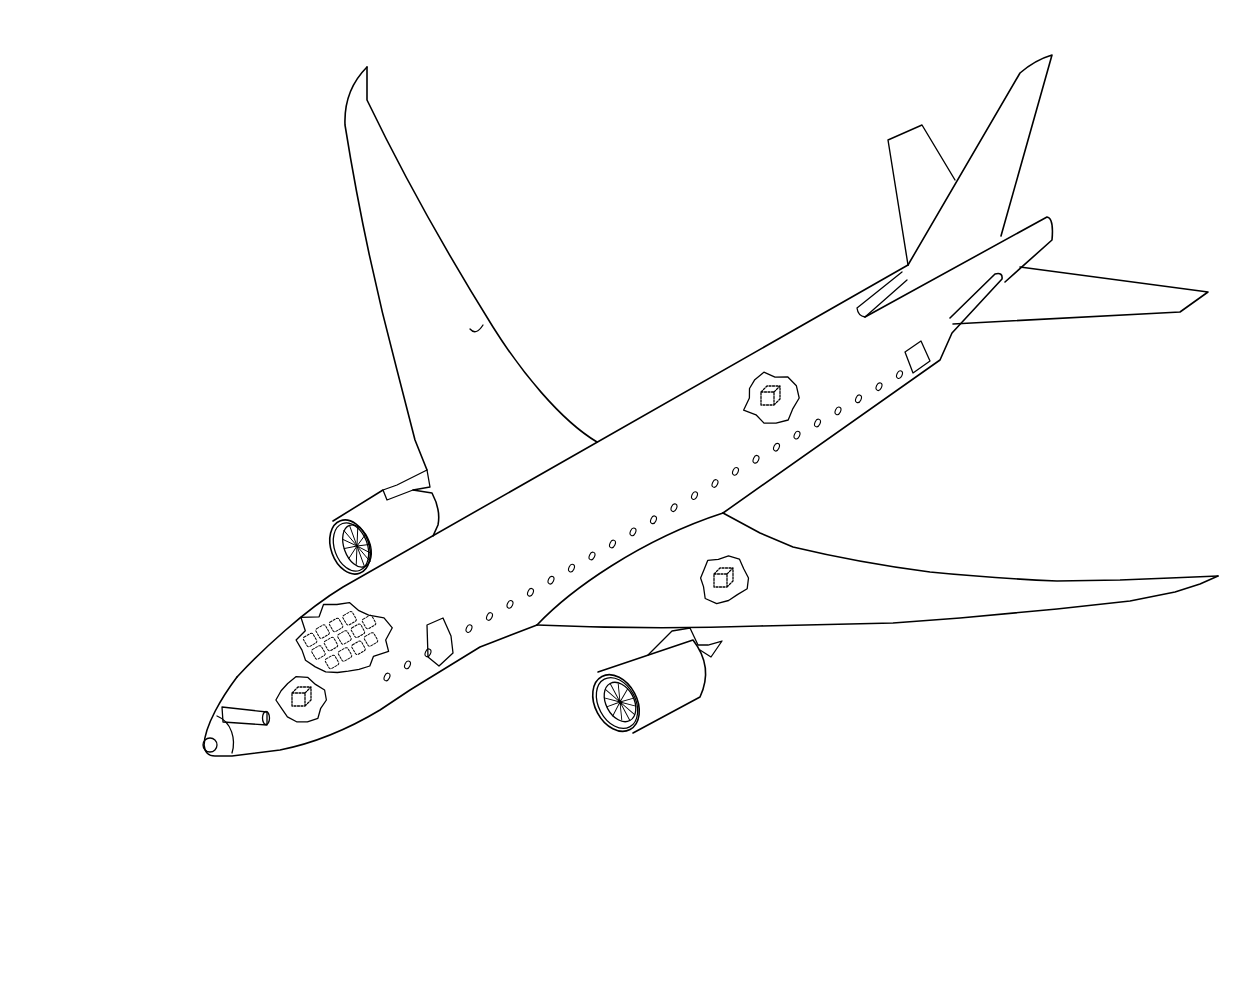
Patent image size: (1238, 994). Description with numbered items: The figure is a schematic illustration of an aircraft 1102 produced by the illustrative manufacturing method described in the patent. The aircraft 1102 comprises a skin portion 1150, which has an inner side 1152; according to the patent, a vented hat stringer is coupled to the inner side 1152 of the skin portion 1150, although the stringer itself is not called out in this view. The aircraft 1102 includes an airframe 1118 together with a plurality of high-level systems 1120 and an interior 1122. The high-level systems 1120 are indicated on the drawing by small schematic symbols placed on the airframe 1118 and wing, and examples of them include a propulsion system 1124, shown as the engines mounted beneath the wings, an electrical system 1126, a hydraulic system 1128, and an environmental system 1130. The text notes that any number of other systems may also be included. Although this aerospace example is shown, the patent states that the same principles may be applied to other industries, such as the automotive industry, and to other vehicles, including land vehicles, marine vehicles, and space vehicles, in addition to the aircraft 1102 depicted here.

The aircraft 1102 is at (205, 373).
The airframe 1118 is at (320, 586).
The high-level systems 1120 is at (970, 455).
The interior 1122 is at (305, 628).
The propulsion system 1124 is at (362, 508).
The electrical system 1126 is at (283, 687).
The hydraulic system 1128 is at (731, 558).
The environmental system 1130 is at (773, 375).
The skin portion 1150 is at (435, 263).
The inner side 1152 is at (493, 328).